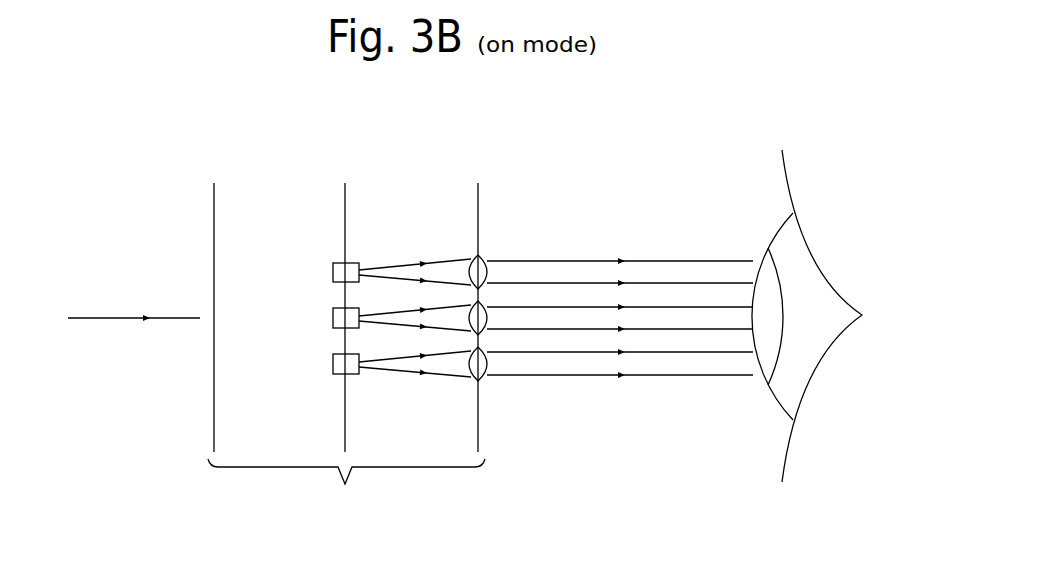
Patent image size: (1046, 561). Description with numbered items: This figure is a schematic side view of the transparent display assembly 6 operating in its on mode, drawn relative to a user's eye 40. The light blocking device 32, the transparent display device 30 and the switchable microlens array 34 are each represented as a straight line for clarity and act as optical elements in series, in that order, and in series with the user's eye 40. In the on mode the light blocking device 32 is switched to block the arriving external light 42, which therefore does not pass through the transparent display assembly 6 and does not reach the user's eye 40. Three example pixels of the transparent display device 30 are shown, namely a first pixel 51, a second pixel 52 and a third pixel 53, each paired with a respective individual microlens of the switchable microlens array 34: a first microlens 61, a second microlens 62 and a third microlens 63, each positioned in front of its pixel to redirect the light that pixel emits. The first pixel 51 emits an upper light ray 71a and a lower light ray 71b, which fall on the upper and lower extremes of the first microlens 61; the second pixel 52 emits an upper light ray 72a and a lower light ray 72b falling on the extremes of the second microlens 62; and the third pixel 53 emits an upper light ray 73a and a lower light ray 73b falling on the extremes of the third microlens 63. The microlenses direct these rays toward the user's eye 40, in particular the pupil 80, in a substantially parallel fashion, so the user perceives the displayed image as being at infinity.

The transparent display assembly 6 is at (346, 487).
The transparent display device 30 is at (344, 190).
The light blocking device 32 is at (213, 187).
The switchable microlens array 34 is at (479, 187).
The user's eye 40 is at (803, 282).
The external light 42 is at (110, 319).
The first pixel 51 is at (333, 266).
The second pixel 52 is at (333, 314).
The third pixel 53 is at (333, 366).
The first microlens 61 is at (487, 272).
The second microlens 62 is at (485, 320).
The third microlens 63 is at (480, 374).
The upper light ray 71a is at (444, 263).
The lower light ray 71b is at (409, 274).
The upper light ray 72a is at (392, 313).
The lower light ray 72b is at (410, 322).
The upper light ray 73a is at (448, 374).
The lower light ray 73b is at (400, 368).
The pupil 80 is at (770, 337).